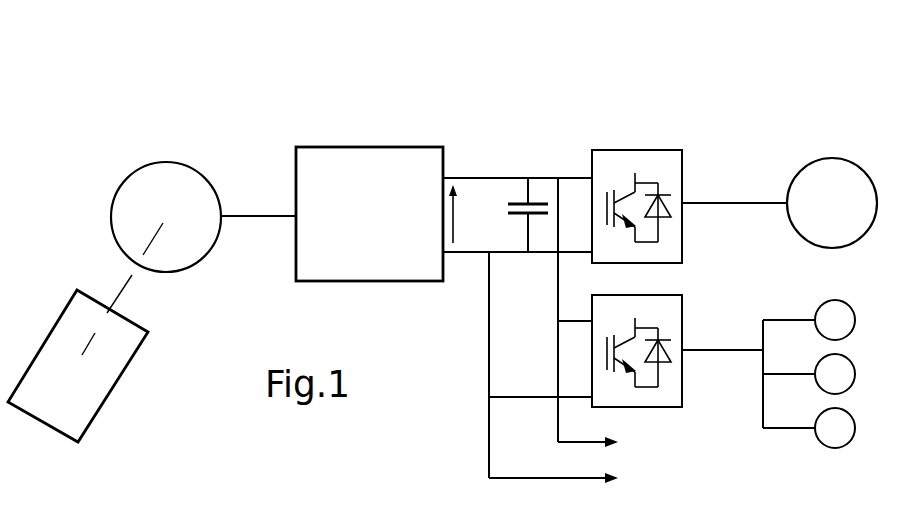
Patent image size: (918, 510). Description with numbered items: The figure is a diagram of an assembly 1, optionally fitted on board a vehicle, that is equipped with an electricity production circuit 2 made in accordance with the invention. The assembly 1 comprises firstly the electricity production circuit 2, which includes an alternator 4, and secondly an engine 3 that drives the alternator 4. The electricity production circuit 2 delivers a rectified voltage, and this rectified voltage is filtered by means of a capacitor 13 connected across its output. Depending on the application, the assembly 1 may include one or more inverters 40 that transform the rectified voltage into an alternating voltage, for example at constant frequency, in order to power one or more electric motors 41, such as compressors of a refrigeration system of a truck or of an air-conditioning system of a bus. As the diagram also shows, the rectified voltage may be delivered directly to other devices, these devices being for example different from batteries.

The assembly 1 is at (226, 94).
The electricity production circuit 2 is at (378, 128).
The engine 3 is at (72, 328).
The alternator 4 is at (170, 178).
The capacitor 13 is at (518, 200).
The inverter 40 is at (643, 160).
The electric motor 41 is at (827, 168).